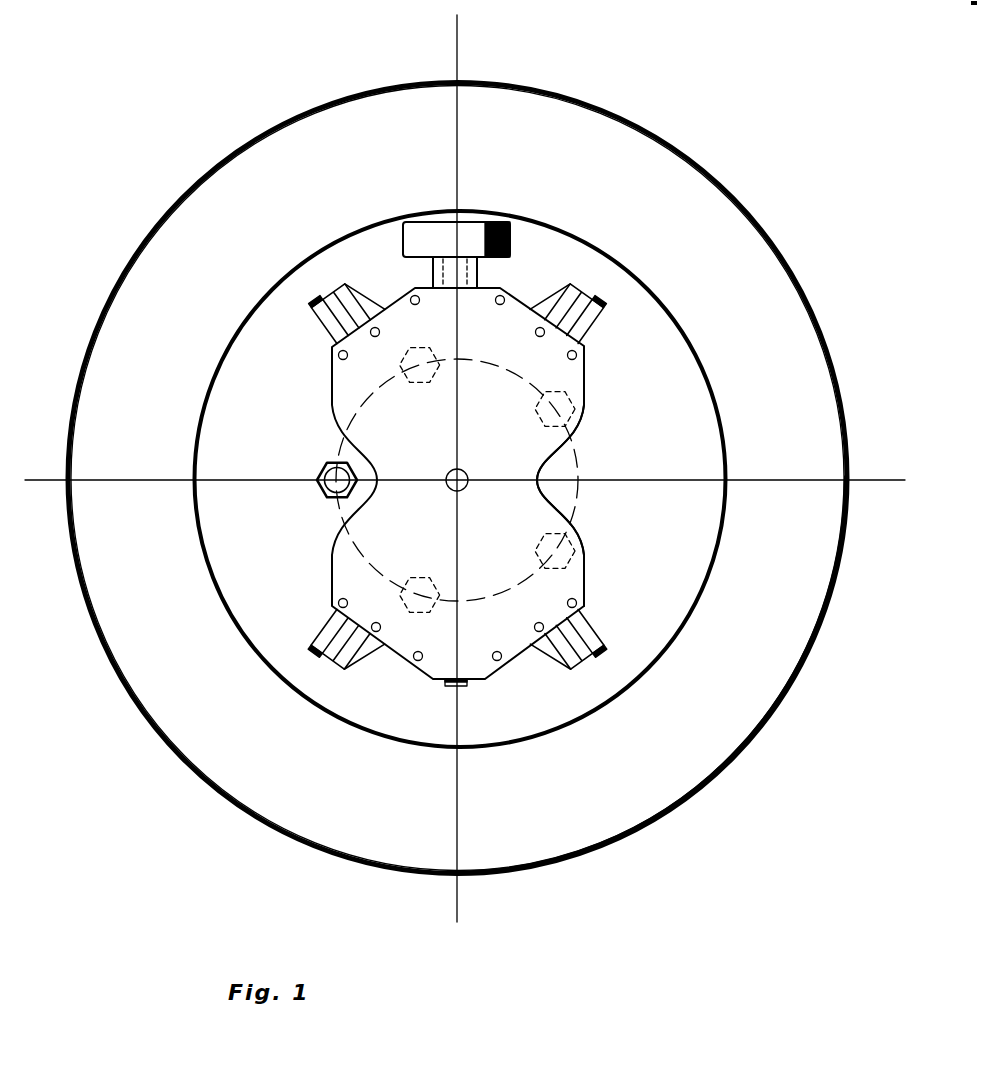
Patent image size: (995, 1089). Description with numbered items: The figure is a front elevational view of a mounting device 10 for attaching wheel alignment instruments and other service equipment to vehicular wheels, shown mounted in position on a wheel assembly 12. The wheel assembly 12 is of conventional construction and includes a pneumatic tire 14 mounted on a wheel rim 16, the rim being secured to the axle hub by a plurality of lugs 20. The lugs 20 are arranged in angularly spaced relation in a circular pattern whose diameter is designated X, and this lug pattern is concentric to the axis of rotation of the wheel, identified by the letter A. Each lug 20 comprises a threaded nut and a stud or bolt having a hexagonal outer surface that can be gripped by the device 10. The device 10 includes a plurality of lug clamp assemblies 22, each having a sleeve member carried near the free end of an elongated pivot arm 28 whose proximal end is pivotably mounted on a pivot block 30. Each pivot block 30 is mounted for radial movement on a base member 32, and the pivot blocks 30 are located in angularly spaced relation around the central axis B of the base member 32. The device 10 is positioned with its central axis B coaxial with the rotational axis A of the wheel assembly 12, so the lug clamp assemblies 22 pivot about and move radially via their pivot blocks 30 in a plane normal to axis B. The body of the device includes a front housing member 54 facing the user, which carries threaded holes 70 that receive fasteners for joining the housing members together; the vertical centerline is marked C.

The mounting device 10 is at (509, 668).
The wheel assembly 12 is at (832, 619).
The pneumatic tire 14 is at (740, 760).
The wheel rim 16 is at (728, 514).
The lugs 20 is at (405, 365).
The lug clamp assembly 22 is at (606, 296).
The pivot arm 28 is at (372, 296).
The pivot block 30 is at (551, 292).
The base member 32 is at (587, 559).
The front housing member 54 is at (585, 428).
The holes 70 is at (499, 295).
The axis of rotation of the wheel A is at (482, 452).
The central axis of the base member B is at (466, 473).
The centerline C is at (460, 48).
The lug pattern diameter X is at (585, 497).